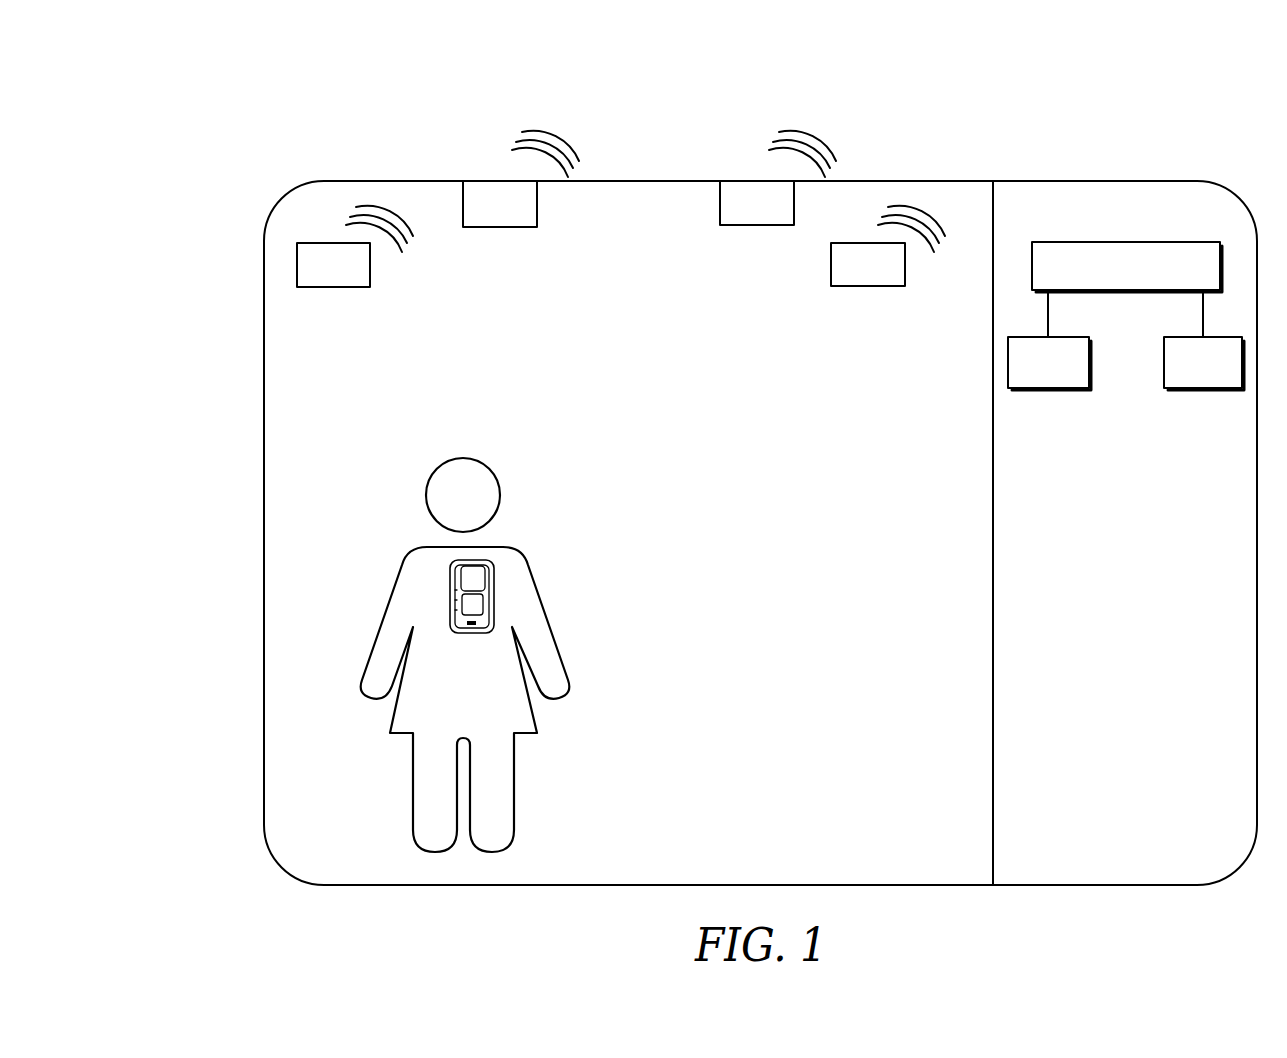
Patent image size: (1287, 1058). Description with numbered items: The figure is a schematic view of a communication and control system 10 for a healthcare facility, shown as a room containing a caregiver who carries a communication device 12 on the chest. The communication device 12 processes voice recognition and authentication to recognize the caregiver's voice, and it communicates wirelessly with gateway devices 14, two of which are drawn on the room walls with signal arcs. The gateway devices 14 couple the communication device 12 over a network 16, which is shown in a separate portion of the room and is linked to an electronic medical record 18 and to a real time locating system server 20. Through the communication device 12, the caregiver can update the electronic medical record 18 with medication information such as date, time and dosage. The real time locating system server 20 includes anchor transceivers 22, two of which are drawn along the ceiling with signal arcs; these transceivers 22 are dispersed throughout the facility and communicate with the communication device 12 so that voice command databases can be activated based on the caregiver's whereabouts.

The communication and control system 10 is at (240, 158).
The communication device 12 is at (508, 580).
The gateway device 14 is at (312, 287).
The network 16 is at (1086, 242).
The electronic medical record 18 is at (1050, 388).
The real time locating system server (RTLS) 20 is at (1205, 388).
The transceiver 22 is at (480, 227).